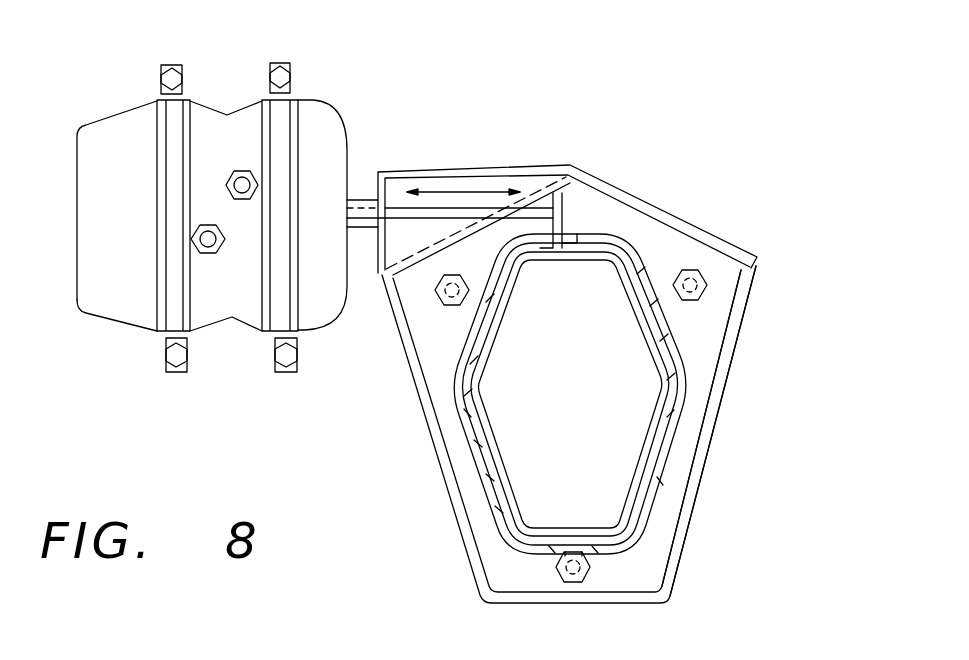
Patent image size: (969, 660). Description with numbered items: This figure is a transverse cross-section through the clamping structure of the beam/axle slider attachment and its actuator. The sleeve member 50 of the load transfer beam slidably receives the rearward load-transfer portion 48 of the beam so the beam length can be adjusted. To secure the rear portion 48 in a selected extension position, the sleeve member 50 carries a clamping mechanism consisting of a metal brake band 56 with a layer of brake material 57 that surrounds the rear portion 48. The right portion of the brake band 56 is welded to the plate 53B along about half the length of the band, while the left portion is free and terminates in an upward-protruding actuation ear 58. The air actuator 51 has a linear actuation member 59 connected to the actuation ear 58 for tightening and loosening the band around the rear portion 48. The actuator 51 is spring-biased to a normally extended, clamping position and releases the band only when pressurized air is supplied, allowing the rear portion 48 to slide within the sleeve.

The rearward load-transfer portion 48 is at (495, 497).
The sleeve member 50 is at (735, 355).
The air actuator 51 is at (345, 120).
The plate 53B is at (697, 477).
The brake band 56 is at (640, 238).
The brake material layer 57 is at (655, 265).
The actuation ear 58 is at (565, 215).
The linear actuation member 59 is at (450, 205).